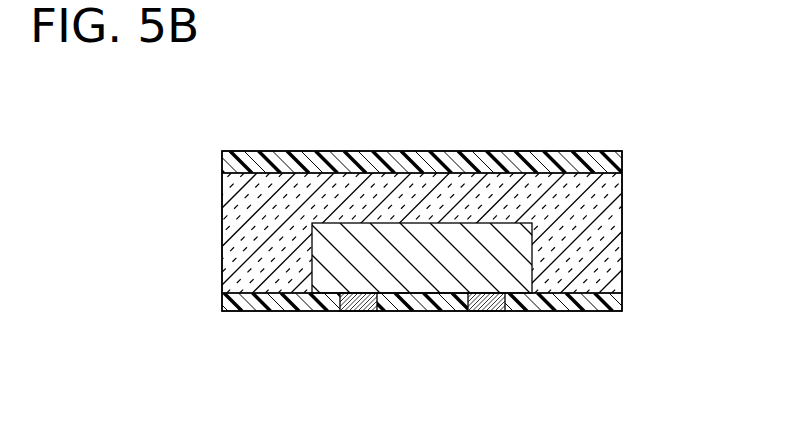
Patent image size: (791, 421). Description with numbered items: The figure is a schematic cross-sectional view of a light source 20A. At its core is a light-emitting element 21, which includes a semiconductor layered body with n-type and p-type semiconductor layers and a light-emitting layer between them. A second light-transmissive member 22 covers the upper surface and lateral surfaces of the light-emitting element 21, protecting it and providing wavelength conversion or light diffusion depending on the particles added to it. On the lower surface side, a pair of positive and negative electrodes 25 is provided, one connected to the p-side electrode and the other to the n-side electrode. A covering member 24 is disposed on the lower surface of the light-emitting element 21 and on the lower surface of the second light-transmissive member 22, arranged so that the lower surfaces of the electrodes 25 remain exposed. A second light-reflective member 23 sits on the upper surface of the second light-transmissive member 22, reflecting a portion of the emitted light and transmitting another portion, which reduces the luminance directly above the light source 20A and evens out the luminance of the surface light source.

The light source 20A is at (492, 128).
The light-emitting element 21 is at (422, 265).
The second light-transmissive member 22 is at (580, 236).
The second light-reflective member 23 is at (578, 160).
The covering member 24 is at (578, 300).
The pair of positive and negative electrodes 25 is at (352, 301).